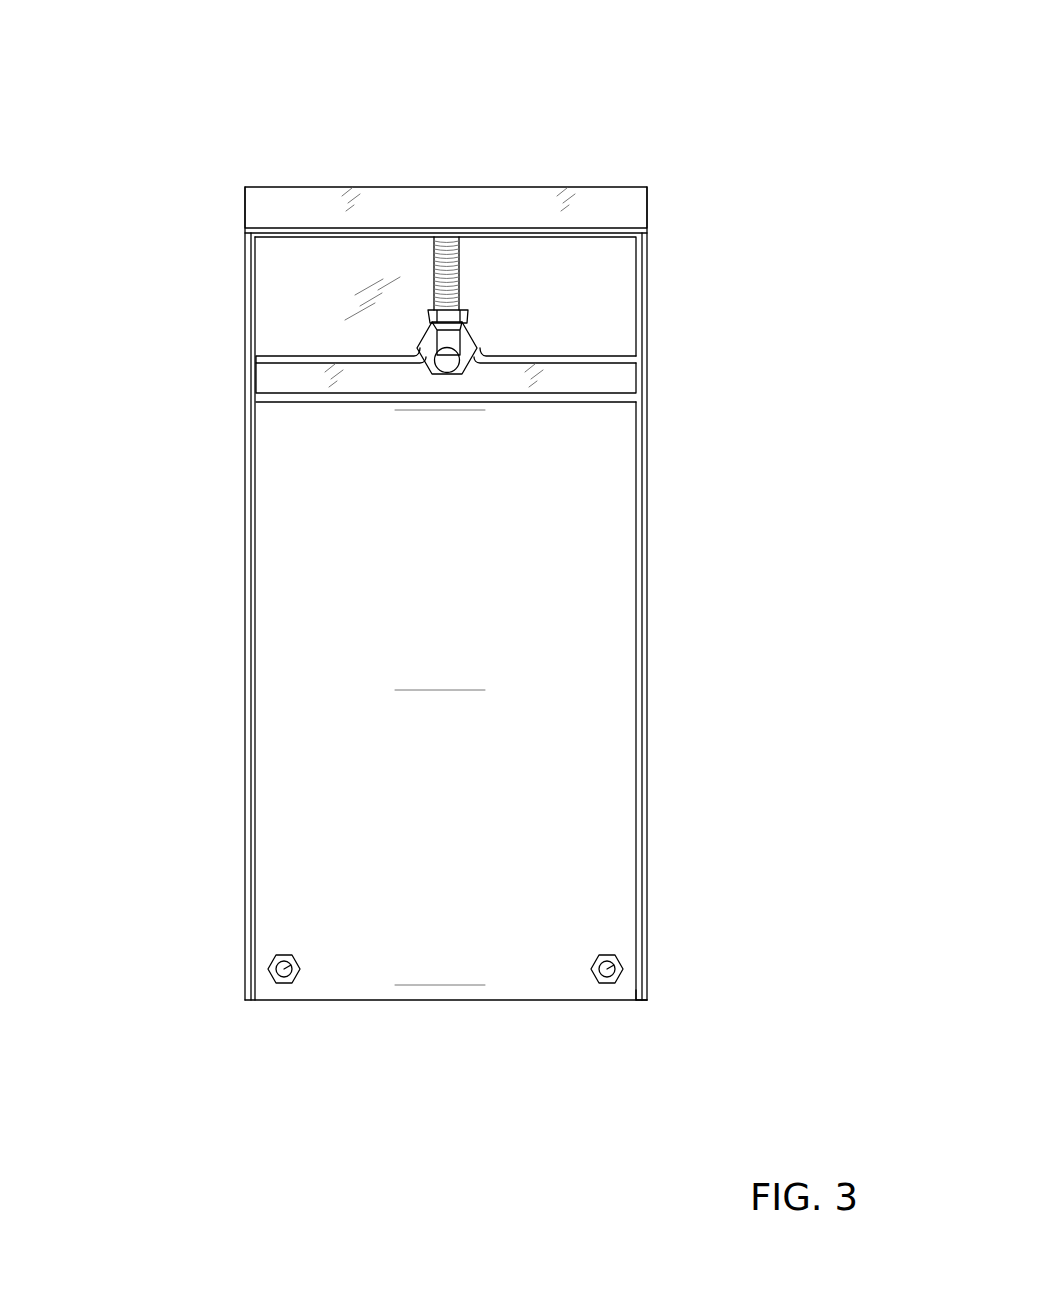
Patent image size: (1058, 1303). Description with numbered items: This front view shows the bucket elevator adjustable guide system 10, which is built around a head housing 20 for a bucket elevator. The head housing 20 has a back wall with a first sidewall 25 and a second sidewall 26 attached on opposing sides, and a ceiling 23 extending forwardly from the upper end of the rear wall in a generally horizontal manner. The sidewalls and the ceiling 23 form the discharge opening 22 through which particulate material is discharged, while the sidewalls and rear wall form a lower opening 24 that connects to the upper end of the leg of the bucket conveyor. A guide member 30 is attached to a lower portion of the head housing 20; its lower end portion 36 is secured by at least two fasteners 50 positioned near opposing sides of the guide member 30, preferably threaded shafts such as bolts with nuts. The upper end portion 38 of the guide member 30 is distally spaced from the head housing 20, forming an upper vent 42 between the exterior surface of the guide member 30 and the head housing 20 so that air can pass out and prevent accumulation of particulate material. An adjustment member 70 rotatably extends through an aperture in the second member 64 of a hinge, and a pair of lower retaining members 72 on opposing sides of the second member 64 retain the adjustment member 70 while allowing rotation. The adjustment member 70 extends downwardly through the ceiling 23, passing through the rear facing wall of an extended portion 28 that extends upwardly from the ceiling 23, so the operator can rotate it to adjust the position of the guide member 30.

The bucket elevator adjustable guide system 10 is at (156, 96).
The head housing 20 is at (236, 540).
The discharge opening 22 is at (641, 587).
The ceiling 23 is at (300, 227).
The lower opening 24 is at (640, 1000).
The first sidewall 25 is at (245, 733).
The second sidewall 26 is at (647, 722).
The extended portion 28 is at (615, 205).
The guide member 30 is at (582, 414).
The lower end portion 36 is at (350, 1000).
The upper end portion 38 is at (313, 400).
The upper vent 42 is at (578, 285).
The fasteners 50 is at (268, 966).
The second member 64 is at (328, 357).
The adjustment member 70 is at (458, 277).
The lower retaining members 72 is at (480, 352).